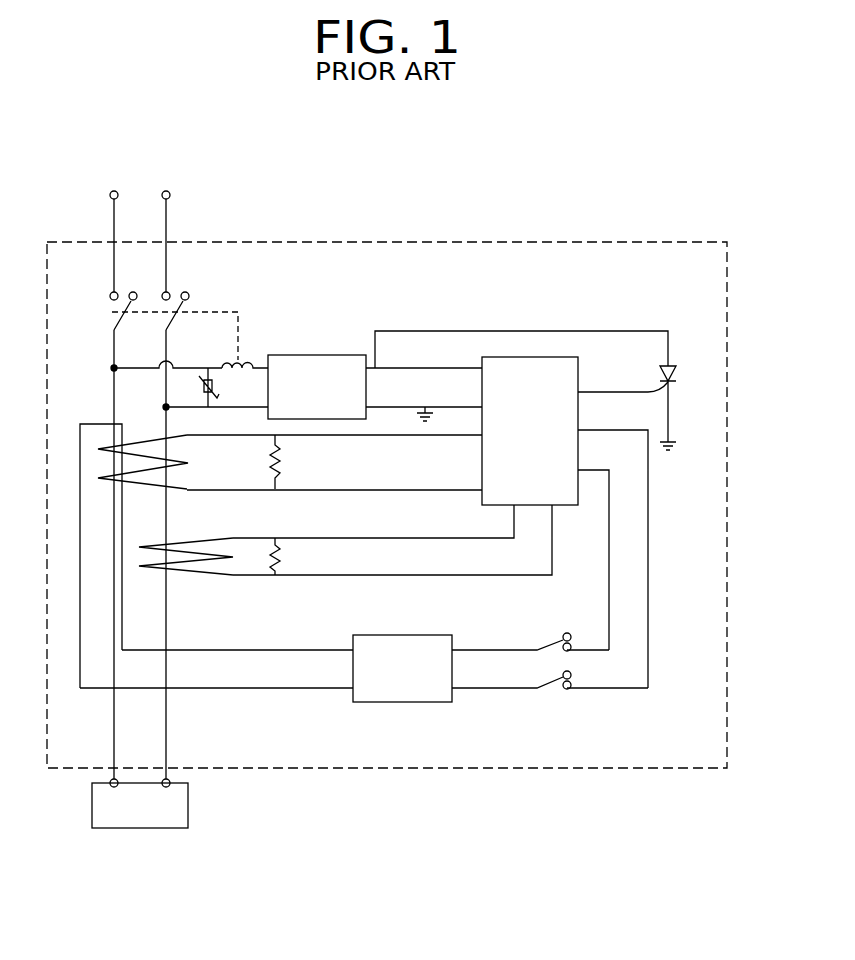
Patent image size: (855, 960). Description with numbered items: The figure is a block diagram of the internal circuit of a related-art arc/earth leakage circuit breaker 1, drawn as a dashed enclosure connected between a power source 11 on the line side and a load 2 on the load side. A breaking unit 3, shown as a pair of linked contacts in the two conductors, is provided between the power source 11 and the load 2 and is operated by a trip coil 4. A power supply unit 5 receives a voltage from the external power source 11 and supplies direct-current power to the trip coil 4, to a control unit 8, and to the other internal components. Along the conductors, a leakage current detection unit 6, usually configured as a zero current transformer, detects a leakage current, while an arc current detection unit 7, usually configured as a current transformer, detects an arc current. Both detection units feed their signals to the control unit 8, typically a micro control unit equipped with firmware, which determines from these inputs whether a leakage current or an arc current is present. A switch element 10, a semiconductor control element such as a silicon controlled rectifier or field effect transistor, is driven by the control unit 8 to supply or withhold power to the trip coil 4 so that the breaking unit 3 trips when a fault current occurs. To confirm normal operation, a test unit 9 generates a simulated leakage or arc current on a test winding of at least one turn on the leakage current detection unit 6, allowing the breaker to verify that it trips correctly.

The arc/earth leakage circuit breaker 1 is at (397, 242).
The load 2 is at (170, 775).
The breaking unit 3 is at (178, 318).
The trip coil 4 is at (250, 360).
The power supply unit 5 is at (316, 355).
The leakage current detection unit 6 is at (143, 490).
The arc current detection unit 7 is at (200, 577).
The control unit 8 is at (528, 357).
The test unit 9 is at (403, 635).
The switch element 10 is at (678, 380).
The power source 11 is at (171, 195).